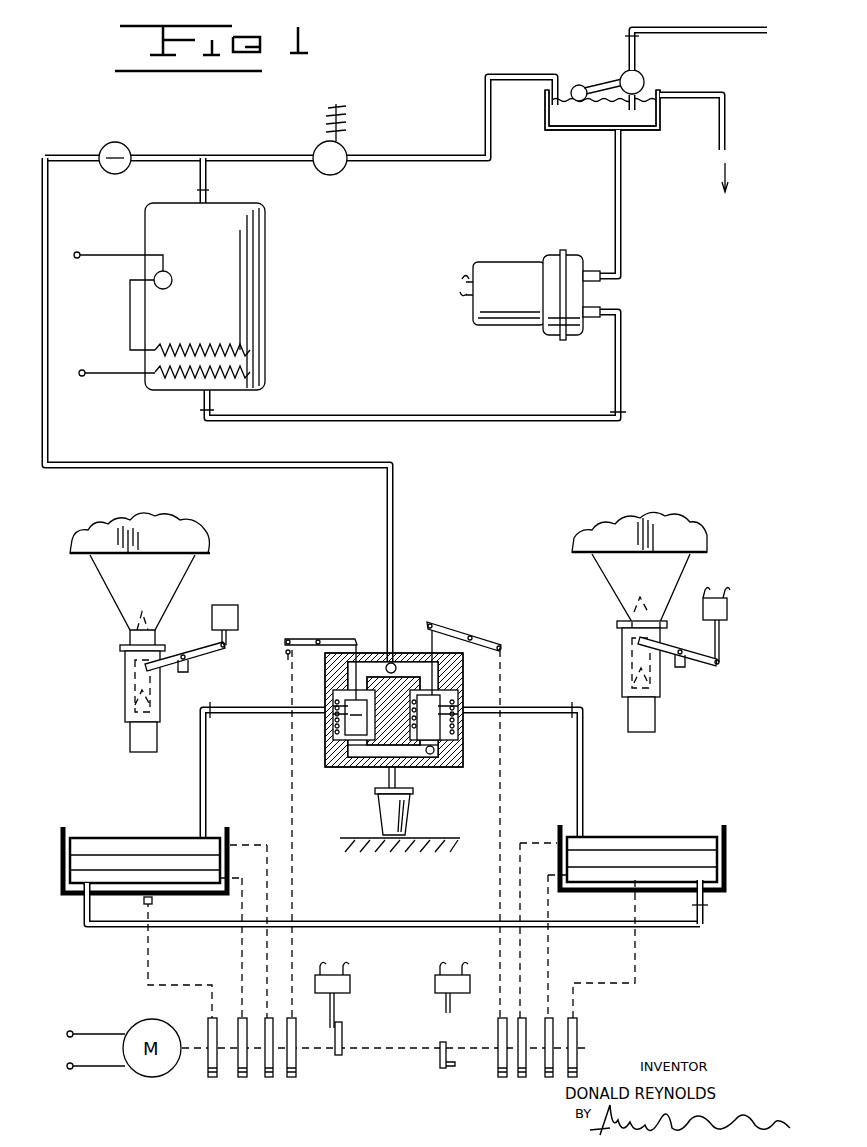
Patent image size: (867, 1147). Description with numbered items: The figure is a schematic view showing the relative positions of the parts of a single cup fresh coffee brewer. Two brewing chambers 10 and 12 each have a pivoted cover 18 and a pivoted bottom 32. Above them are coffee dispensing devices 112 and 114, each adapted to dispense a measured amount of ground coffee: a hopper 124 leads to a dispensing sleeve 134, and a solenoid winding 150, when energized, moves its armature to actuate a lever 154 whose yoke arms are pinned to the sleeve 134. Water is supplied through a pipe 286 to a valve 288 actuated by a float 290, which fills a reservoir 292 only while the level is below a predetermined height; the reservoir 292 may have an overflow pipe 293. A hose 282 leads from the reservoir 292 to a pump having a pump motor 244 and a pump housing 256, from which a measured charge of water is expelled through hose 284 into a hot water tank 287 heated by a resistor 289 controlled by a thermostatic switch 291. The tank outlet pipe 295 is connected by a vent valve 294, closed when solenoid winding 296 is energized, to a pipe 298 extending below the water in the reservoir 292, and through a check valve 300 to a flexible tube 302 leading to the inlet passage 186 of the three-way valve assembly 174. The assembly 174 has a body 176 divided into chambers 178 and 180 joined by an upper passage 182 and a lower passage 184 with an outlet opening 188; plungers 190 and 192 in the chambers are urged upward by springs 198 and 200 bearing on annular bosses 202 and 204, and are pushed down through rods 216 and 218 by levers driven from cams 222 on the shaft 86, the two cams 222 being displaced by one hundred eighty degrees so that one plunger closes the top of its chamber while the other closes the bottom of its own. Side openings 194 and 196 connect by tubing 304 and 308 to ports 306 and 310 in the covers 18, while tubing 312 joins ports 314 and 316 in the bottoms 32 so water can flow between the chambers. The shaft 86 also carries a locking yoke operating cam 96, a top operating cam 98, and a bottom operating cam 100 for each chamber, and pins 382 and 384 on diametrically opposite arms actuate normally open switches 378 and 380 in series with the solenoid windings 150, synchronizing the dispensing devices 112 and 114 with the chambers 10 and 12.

The brewing chamber 10 is at (119, 817).
The brewing chamber 12 is at (660, 817).
The cover 18 is at (162, 840).
The bottom 32 is at (188, 888).
The shaft 86 is at (388, 1048).
The locking yoke operating cam 96 is at (208, 1080).
The top operating cam 98 is at (243, 1082).
The bottom operating cam 100 is at (270, 1080).
The coffee dispensing device 112 is at (95, 675).
The coffee dispensing device 114 is at (600, 617).
The hopper 124 is at (170, 594).
The dispensing sleeve 134 is at (127, 702).
The solenoid winding 150 is at (240, 612).
The lever 154 is at (192, 662).
The three-way valve assembly 174 is at (461, 606).
The body 176 is at (463, 758).
The chamber 178 is at (345, 705).
The chamber 180 is at (450, 702).
The passage 182 is at (385, 660).
The passage 184 is at (418, 770).
The inlet passage 186 is at (358, 642).
The outlet opening 188 is at (390, 785).
The plunger 190 is at (348, 757).
The plunger 192 is at (458, 726).
The opening 194 is at (333, 704).
The opening 196 is at (462, 715).
The spring 198 is at (340, 722).
The spring 200 is at (470, 748).
The annular boss 202 is at (333, 718).
The annular boss 204 is at (455, 692).
The rod 216 is at (310, 672).
The rod 218 is at (422, 636).
The cam 222 is at (297, 1078).
The pump motor 244 is at (512, 262).
The pump housing 256 is at (556, 255).
The flexible hose 282 is at (624, 236).
The flexible hose 284 is at (624, 386).
The pipe 286 is at (705, 36).
The hot water tank 287 is at (268, 335).
The valve 288 is at (644, 80).
The resistor 289 is at (255, 362).
The float 290 is at (583, 86).
The thermostatic switch 291 is at (173, 280).
The reservoir 292 is at (646, 132).
The overflow pipe 293 is at (695, 95).
The vent valve 294 is at (348, 150).
The pipe 295 is at (212, 178).
The solenoid winding 296 is at (320, 118).
The pipe 298 is at (530, 70).
The check valve 300 is at (132, 150).
The flexible tube 302 is at (398, 525).
The flexible tubing 304 is at (232, 702).
The port 306 is at (208, 840).
The tubing 308 is at (585, 780).
The port 310 is at (576, 838).
The tubing 312 is at (395, 920).
The port 314 is at (62, 882).
The port 316 is at (690, 898).
The normally open switch 378 is at (352, 984).
The normally open switch 380 is at (432, 972).
The pin 382 is at (345, 1022).
The pin 384 is at (445, 1070).